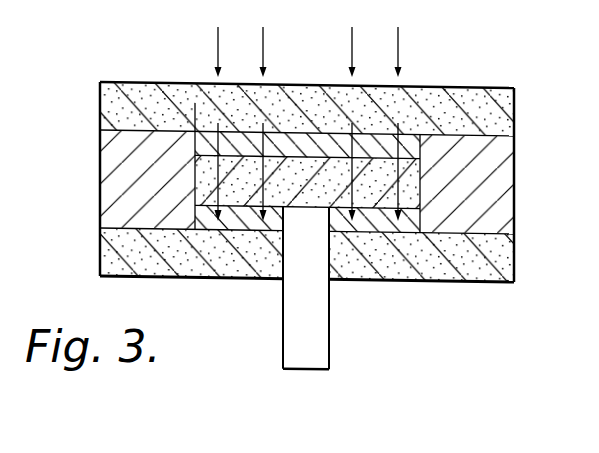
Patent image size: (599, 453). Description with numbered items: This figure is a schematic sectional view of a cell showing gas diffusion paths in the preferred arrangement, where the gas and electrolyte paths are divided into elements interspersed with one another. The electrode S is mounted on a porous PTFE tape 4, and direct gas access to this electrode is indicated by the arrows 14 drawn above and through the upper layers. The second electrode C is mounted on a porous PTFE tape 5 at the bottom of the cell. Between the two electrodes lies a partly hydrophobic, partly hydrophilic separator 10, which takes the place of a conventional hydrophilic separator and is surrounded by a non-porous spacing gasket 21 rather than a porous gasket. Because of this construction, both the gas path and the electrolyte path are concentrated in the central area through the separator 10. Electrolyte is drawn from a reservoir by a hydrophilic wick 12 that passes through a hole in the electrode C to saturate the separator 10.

The porous PTFE tape 4 is at (507, 118).
The porous PTFE tape 5 is at (502, 263).
The partly hydrophobic, partly hydrophilic separator 10 is at (408, 178).
The hydrophilic wick 12 is at (296, 338).
The arrows 14 is at (352, 38).
The non-porous spacing gasket 21 is at (110, 160).
The electrode S is at (376, 140).
The second electrode C is at (380, 223).